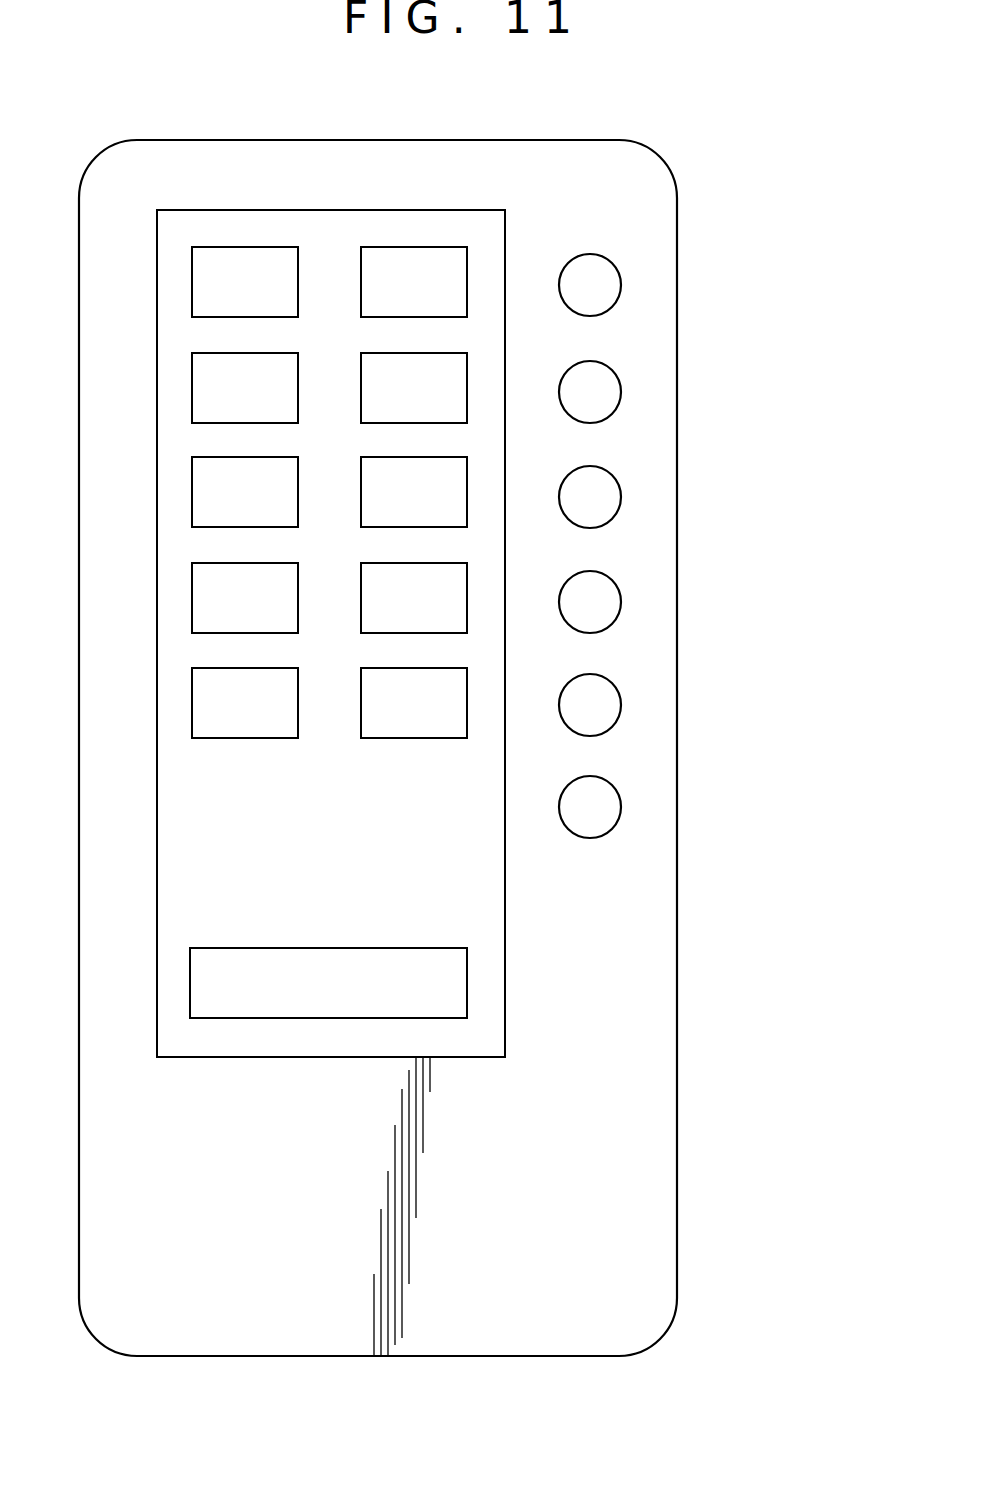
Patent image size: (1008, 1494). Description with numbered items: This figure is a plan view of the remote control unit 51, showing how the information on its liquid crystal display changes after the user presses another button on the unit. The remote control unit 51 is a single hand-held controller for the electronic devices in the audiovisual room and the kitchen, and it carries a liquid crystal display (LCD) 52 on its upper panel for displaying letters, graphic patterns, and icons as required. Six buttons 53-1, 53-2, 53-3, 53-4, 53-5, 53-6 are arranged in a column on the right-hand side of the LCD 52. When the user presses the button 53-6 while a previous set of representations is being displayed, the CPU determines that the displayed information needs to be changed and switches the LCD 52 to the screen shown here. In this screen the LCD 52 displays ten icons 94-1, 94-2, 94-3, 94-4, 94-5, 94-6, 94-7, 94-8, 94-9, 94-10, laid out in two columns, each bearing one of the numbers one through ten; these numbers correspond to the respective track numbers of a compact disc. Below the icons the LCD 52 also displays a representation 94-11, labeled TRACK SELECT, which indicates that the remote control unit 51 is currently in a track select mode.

The remote control unit 51 is at (677, 1131).
The liquid crystal display 52 is at (505, 988).
The button 53-1 is at (621, 285).
The button 53-2 is at (621, 392).
The button 53-3 is at (621, 497).
The button 53-4 is at (621, 602).
The button 53-5 is at (621, 705).
The button 53-6 is at (621, 807).
The icon 94-1 is at (239, 230).
The icon 94-2 is at (408, 230).
The icon 94-3 is at (239, 336).
The icon 94-4 is at (408, 336).
The icon 94-5 is at (239, 440).
The icon 94-6 is at (408, 440).
The icon 94-7 is at (239, 546).
The icon 94-8 is at (408, 546).
The icon 94-9 is at (239, 651).
The icon 94-10 is at (375, 738).
The representation 94-11 is at (349, 948).